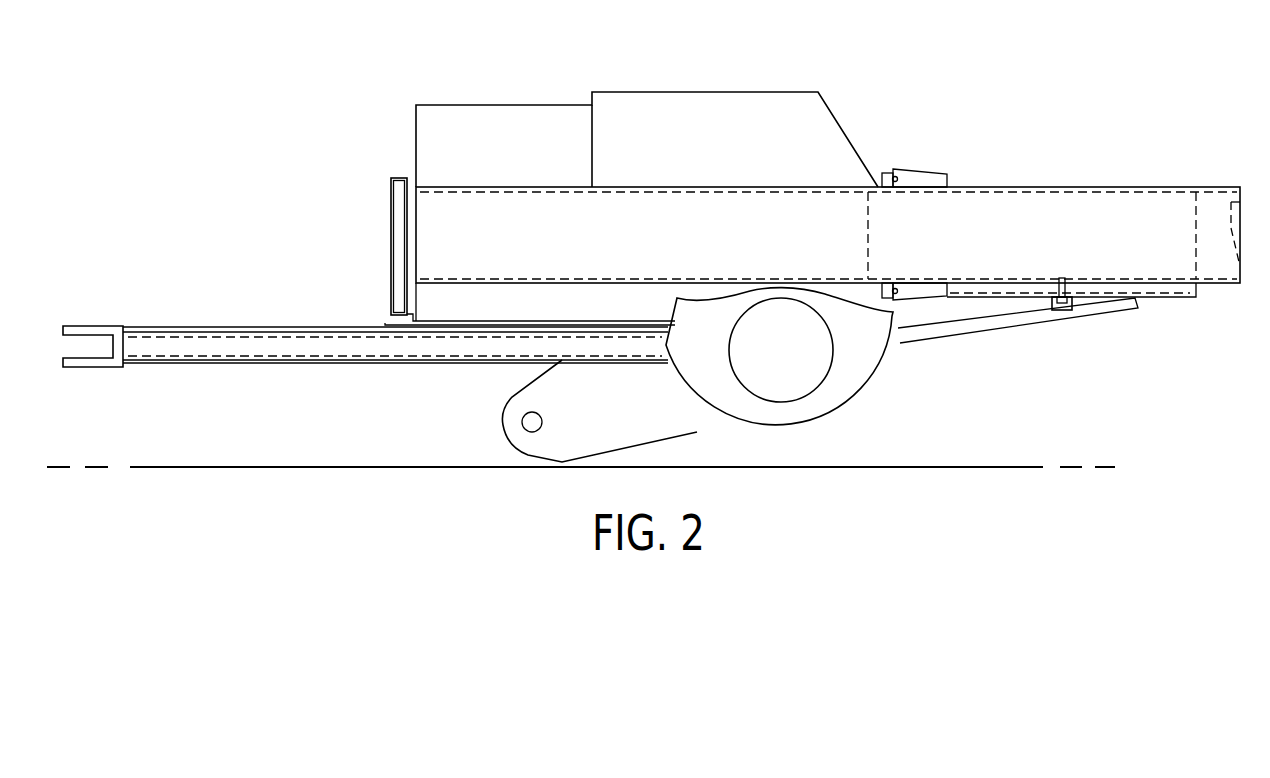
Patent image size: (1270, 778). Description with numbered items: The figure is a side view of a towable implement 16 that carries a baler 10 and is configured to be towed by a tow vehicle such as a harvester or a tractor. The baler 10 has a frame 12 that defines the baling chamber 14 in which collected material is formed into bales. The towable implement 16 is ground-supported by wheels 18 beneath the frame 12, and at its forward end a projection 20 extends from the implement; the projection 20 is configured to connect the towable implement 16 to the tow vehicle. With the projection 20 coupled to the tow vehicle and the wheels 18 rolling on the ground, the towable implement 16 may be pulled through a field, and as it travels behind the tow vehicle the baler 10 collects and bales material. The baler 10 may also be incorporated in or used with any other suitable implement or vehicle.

The baler 10 is at (812, 200).
The frame 12 is at (918, 183).
The baling chamber 14 is at (1057, 246).
The towable implement 16 is at (753, 63).
The wheels 18 is at (855, 408).
The projection 20 is at (90, 367).